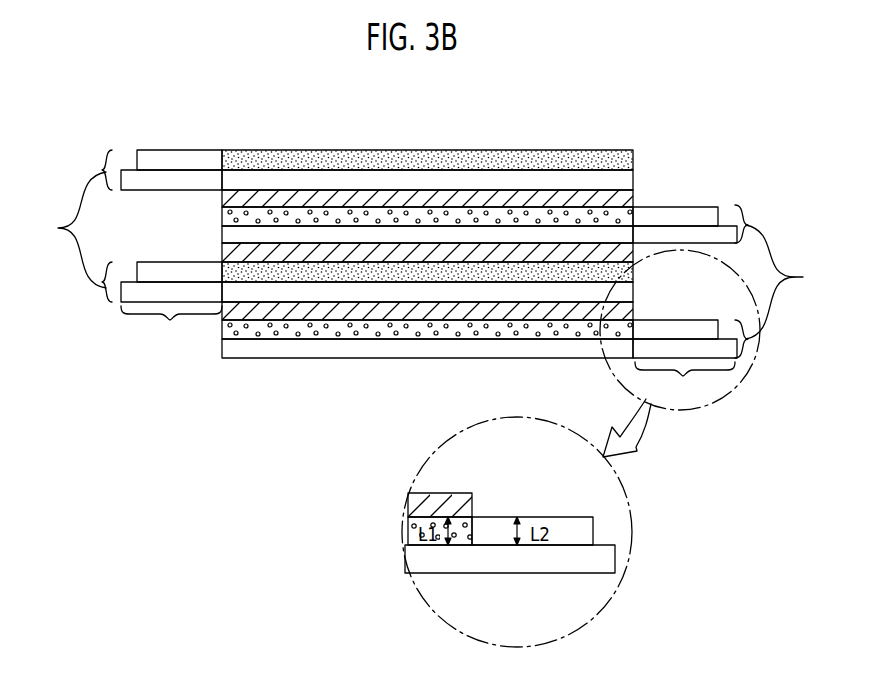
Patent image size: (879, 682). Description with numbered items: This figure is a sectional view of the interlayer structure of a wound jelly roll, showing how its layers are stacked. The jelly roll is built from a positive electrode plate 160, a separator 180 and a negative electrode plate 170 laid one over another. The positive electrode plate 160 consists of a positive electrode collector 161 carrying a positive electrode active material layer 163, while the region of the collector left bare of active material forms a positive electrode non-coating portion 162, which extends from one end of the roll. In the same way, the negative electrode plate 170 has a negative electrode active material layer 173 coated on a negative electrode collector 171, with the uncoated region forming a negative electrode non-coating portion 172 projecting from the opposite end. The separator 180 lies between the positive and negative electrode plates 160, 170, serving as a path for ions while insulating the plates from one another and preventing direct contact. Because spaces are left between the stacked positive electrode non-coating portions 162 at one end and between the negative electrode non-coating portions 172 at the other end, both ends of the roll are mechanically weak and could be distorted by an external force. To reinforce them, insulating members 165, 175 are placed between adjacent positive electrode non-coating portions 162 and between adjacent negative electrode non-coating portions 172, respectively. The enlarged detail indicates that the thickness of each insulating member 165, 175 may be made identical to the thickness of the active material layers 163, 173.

The positive electrode plate 160 is at (67, 226).
The positive electrode collector 161 is at (110, 290).
The positive electrode non-coating portion 162 is at (171, 325).
The positive electrode active material layer 163 is at (222, 276).
The insulating member 165 is at (157, 150).
The negative electrode plate 170 is at (784, 281).
The negative electrode collector 171 is at (730, 338).
The negative electrode non-coating portion 172 is at (685, 382).
The negative electrode active material layer 173 is at (222, 330).
The insulating member 175 is at (678, 318).
The separator 180 is at (633, 308).